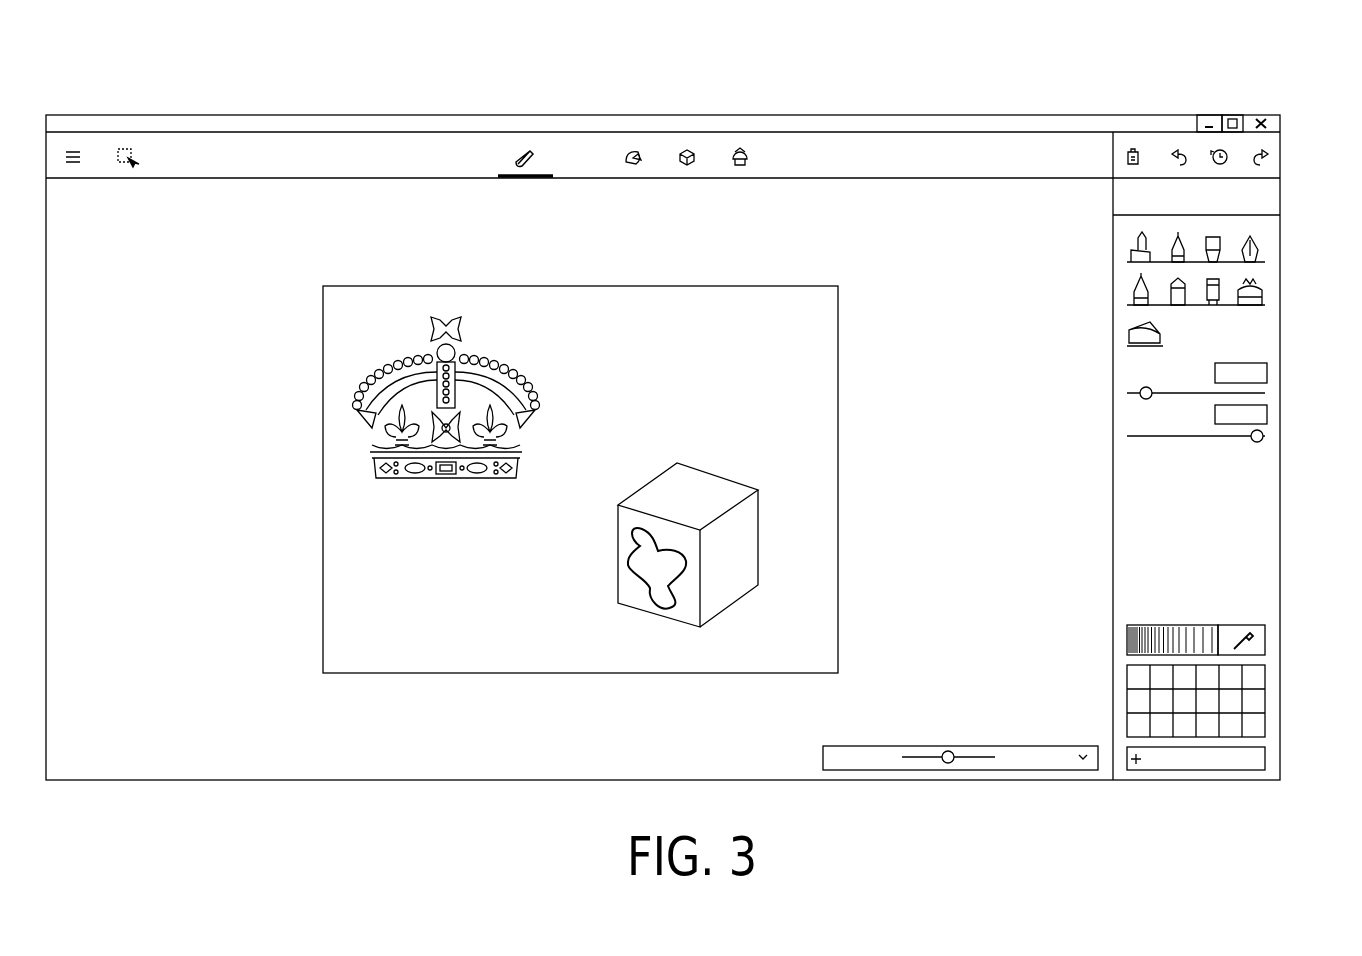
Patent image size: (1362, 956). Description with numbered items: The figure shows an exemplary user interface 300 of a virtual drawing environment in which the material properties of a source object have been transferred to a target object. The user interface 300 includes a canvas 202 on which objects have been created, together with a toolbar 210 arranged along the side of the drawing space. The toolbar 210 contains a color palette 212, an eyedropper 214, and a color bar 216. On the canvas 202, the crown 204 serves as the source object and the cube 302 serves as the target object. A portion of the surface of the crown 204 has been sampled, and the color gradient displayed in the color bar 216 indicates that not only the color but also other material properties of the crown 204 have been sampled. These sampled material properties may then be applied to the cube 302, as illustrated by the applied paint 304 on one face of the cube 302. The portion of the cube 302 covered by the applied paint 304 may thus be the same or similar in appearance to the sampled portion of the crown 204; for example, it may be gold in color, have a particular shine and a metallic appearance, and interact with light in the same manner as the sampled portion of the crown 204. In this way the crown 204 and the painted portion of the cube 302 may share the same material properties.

The user interface 300 is at (1215, 80).
The canvas 202 is at (788, 293).
The crown 204 is at (504, 348).
The cube 302 is at (727, 458).
The applied paint 304 is at (630, 561).
The toolbar 210 is at (1295, 270).
The color palette 212 is at (1278, 692).
The eyedropper 214 is at (1241, 624).
The color bar 216 is at (1173, 624).